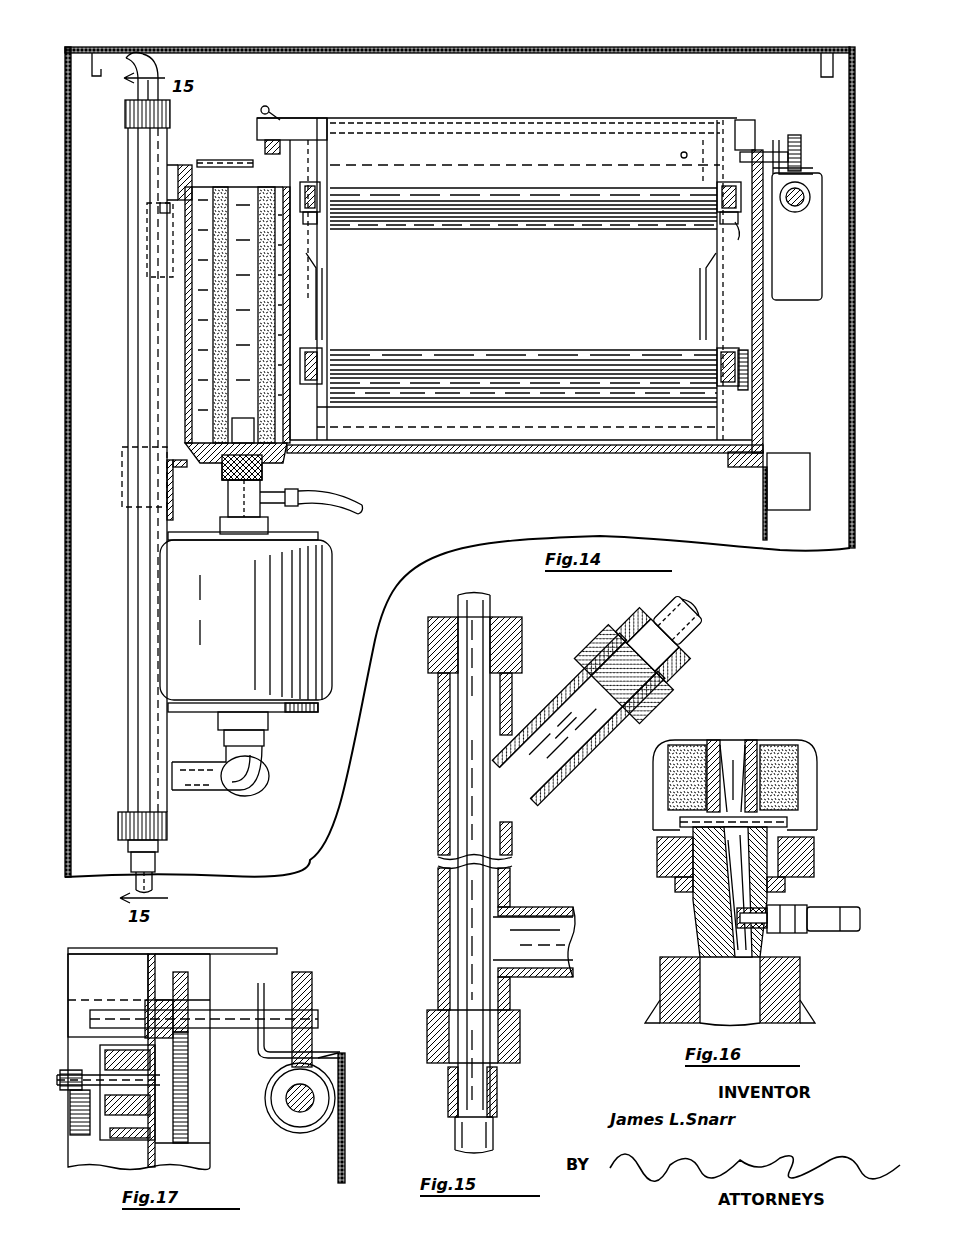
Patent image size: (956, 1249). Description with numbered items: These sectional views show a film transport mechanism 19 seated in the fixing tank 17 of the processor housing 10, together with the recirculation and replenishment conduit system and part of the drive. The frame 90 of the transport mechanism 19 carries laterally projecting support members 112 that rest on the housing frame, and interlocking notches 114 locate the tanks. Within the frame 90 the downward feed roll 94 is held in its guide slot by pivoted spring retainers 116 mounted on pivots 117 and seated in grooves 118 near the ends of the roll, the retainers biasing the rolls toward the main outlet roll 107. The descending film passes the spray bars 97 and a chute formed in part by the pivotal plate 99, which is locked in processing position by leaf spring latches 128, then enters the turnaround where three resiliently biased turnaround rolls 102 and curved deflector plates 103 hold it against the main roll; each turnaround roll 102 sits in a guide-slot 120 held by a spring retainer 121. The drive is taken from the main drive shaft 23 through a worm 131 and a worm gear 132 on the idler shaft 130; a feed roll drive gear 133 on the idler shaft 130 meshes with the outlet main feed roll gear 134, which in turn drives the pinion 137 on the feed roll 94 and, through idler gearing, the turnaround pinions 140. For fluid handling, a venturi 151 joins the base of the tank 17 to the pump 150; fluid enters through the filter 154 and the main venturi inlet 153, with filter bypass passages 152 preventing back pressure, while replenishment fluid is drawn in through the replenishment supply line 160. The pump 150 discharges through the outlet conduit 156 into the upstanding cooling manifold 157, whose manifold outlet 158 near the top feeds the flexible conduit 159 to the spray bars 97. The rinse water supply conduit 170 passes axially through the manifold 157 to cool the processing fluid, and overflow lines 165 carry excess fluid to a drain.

In FIG. 14, the processor housing 10 is at (526, 43).
In FIG. 17, the processor housing 10 is at (345, 1100).
In FIG. 14, the fixing tank 17 is at (470, 453).
In FIG. 16, the fixing tank 17 is at (657, 860).
In FIG. 14, the transport mechanism 19 is at (556, 103).
In FIG. 17, the transport mechanism 19 is at (220, 947).
In FIG. 14, the main drive shaft 23 is at (795, 212).
In FIG. 17, the main drive shaft 23 is at (286, 1098).
In FIG. 17, the frame 90 is at (148, 978).
In FIG. 14, the downward feed roll 94 is at (518, 190).
In FIG. 14, the spray bars 97 is at (490, 222).
In FIG. 14, the pivotal plate 99 is at (488, 306).
In FIG. 14, the turnaround rolls 102 is at (545, 362).
In FIG. 14, the curved deflector plates 103 is at (432, 386).
In FIG. 17, the main outlet roll 107 is at (90, 1140).
In FIG. 14, the support members 112 is at (325, 118).
In FIG. 17, the support members 112 is at (128, 948).
In FIG. 14, the interlocking notches 114 is at (780, 150).
In FIG. 17, the interlocking notches 114 is at (264, 990).
In FIG. 14, the spring retainers 116 is at (318, 193).
In FIG. 14, the pivots 117 is at (310, 140).
In FIG. 14, the grooves 118 is at (312, 224).
In FIG. 14, the guide-slots 120 is at (420, 396).
In FIG. 14, the spring retainer 121 is at (320, 364).
In FIG. 14, the leaf spring latches 128 is at (322, 300).
In FIG. 14, the idler shaft 130 is at (775, 152).
In FIG. 17, the idler shaft 130 is at (318, 1012).
In FIG. 17, the worm 131 is at (292, 1126).
In FIG. 14, the worm gear 132 is at (801, 144).
In FIG. 17, the worm gear 132 is at (312, 980).
In FIG. 17, the feed roll drive gear 133 is at (188, 985).
In FIG. 17, the outlet main feed roll gear 134 is at (188, 1138).
In FIG. 14, the pinion 137 is at (736, 238).
In FIG. 14, the turnaround pinions 140 is at (748, 366).
In FIG. 14, the pump 150 is at (318, 600).
In FIG. 16, the pump 150 is at (670, 1005).
In FIG. 14, the venturi 151 is at (228, 498).
In FIG. 16, the venturi 151 is at (693, 912).
In FIG. 16, the filter bypass passages 152 is at (680, 822).
In FIG. 16, the main venturi inlet 153 is at (745, 748).
In FIG. 14, the filter 154 is at (224, 187).
In FIG. 16, the filter 154 is at (700, 742).
In FIG. 14, the outlet conduit 156 is at (215, 790).
In FIG. 15, the outlet conduit 156 is at (545, 977).
In FIG. 14, the cooling manifold 157 is at (128, 728).
In FIG. 15, the cooling manifold 157 is at (438, 835).
In FIG. 15, the manifold outlet 158 is at (540, 690).
In FIG. 14, the flexible conduit 159 is at (268, 106).
In FIG. 15, the flexible conduit 159 is at (708, 612).
In FIG. 14, the replenishment supply line 160 is at (340, 500).
In FIG. 16, the replenishment supply line 160 is at (848, 932).
In FIG. 14, the overflow lines 165 is at (178, 178).
In FIG. 14, the rinse water supply conduit 170 is at (142, 54).
In FIG. 15, the rinse water supply conduit 170 is at (492, 612).